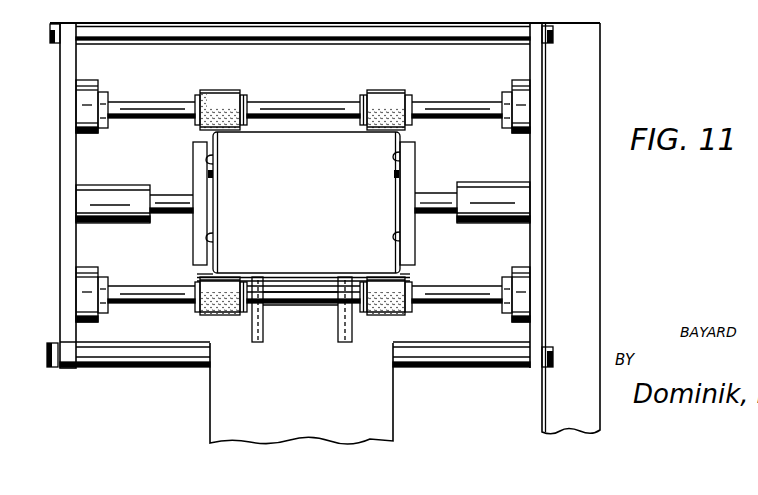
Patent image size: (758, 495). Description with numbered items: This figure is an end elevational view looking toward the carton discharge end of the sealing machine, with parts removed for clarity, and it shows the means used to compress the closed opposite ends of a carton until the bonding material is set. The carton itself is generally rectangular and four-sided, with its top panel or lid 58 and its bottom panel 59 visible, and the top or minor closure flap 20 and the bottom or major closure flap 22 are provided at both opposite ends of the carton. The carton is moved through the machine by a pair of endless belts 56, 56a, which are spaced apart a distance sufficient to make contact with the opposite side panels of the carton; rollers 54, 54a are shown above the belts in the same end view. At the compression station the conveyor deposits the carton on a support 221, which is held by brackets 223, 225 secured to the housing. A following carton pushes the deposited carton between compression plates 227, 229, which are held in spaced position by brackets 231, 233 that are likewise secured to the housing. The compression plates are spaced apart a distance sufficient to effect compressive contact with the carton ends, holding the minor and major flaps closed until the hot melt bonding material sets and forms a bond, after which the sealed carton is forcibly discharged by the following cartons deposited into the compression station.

The top or minor closure flap 20 is at (211, 160).
The bottom or major closure flap 22 is at (211, 238).
The upper roller 54 is at (220, 92).
The upper roller 54a is at (414, 64).
The endless belt 56 is at (197, 318).
The endless belt 56a is at (397, 316).
The top panel or lid 58 is at (300, 131).
The bottom panel 59 is at (327, 276).
The support 221 is at (306, 272).
The bracket 223 is at (250, 328).
The bracket 225 is at (351, 333).
The compression plate 227 is at (193, 228).
The compression plate 229 is at (415, 224).
The bracket 231 is at (163, 193).
The bracket 233 is at (442, 193).